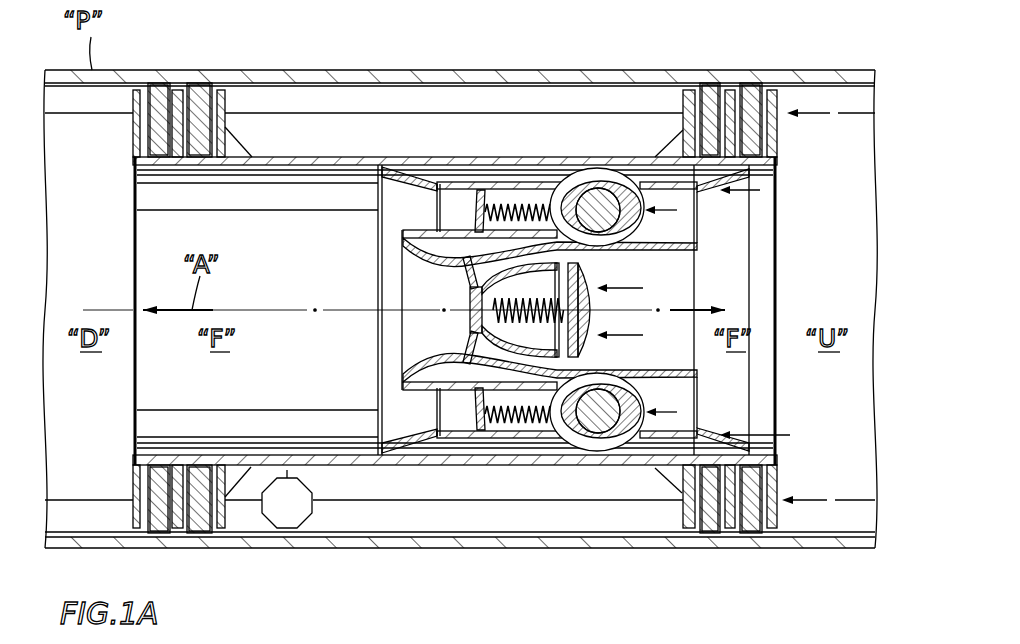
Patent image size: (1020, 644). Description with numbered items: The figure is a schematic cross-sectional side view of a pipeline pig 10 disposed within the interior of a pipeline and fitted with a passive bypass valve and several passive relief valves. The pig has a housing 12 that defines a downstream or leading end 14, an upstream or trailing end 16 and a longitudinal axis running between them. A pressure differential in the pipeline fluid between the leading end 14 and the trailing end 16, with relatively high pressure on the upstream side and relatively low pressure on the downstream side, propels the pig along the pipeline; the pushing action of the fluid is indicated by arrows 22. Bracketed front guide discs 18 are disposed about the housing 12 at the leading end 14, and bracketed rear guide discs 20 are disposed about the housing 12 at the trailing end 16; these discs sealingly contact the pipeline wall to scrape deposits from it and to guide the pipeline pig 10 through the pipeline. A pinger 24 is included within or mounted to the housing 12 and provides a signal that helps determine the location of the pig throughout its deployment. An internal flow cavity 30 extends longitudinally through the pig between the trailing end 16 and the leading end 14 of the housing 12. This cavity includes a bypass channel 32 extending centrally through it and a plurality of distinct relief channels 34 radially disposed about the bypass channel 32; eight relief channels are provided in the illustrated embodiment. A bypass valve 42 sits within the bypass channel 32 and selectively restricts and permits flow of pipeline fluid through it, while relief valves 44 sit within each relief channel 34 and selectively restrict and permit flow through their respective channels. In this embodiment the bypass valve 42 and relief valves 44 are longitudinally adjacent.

The pipeline pig 10 is at (563, 100).
The housing 12 is at (327, 157).
The leading end 14 is at (133, 198).
The trailing end 16 is at (765, 195).
The bracketed front guide discs 18 is at (196, 62).
The bracketed rear guide discs 20 is at (763, 63).
The arrows 22 is at (766, 428).
The pinger 24 is at (313, 503).
The internal flow cavity 30 is at (760, 250).
The bypass channel 32 is at (672, 289).
The relief channels 34 is at (682, 402).
The bypass valve 42 is at (466, 260).
The relief valves 44 is at (473, 397).